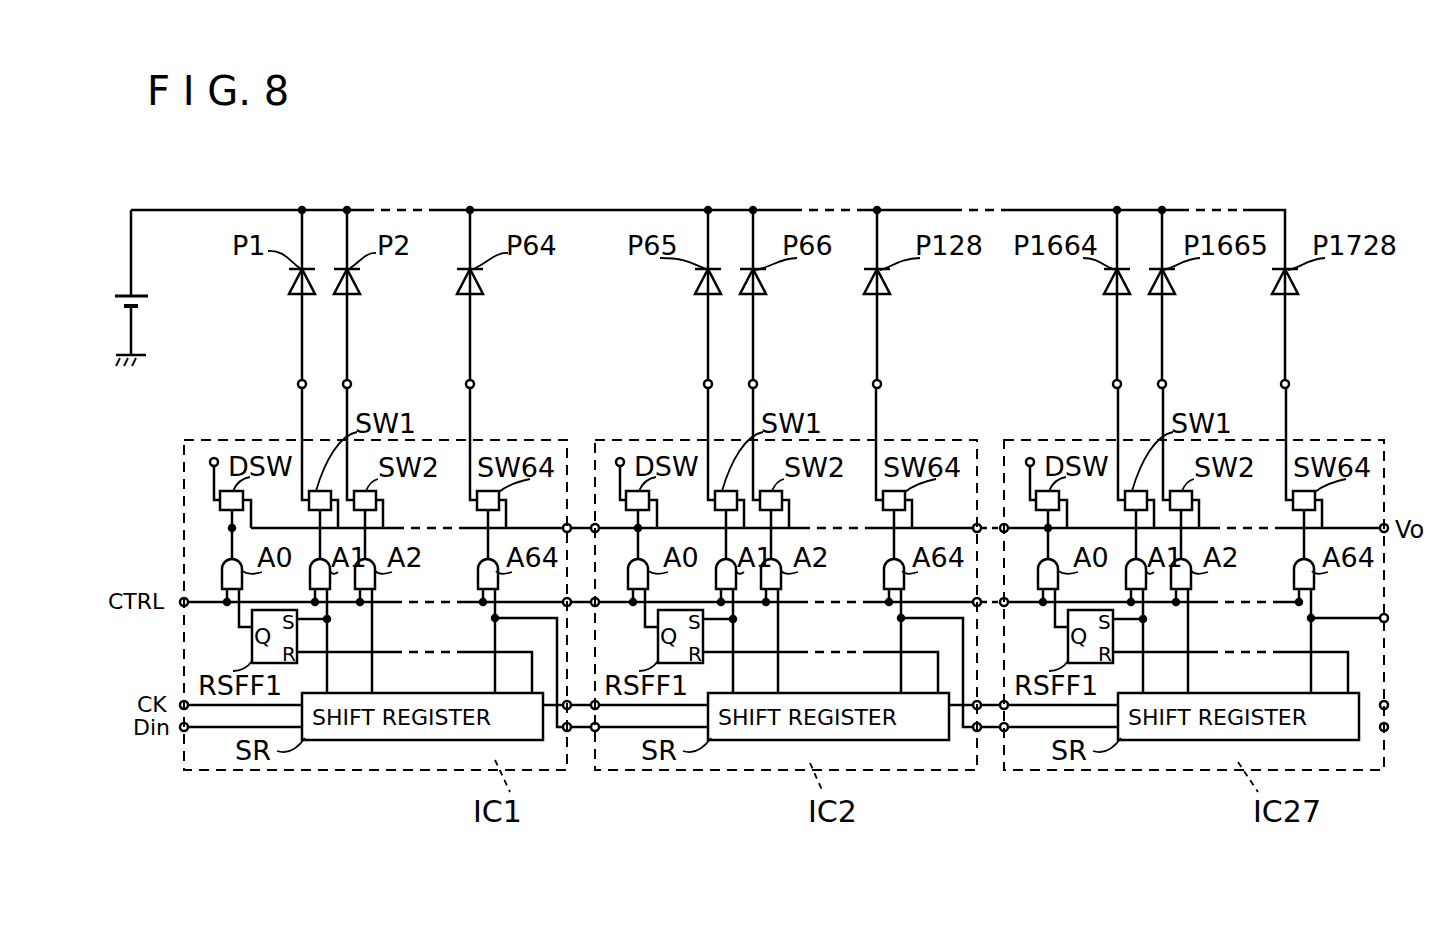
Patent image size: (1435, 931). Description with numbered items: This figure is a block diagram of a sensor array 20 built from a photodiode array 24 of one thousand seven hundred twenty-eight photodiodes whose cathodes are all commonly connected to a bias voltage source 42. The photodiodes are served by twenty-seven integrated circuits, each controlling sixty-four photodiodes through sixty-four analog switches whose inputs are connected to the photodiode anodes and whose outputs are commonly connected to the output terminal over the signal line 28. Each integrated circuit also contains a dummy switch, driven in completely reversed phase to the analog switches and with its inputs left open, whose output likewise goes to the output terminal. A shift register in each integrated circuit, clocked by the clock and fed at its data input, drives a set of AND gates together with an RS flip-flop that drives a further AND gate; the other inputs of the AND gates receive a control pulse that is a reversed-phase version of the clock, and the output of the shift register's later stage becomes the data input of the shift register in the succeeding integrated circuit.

The sensor array 20 is at (732, 167).
The photodiode array 24 is at (274, 288).
The signal line 28 is at (581, 528).
The bias voltage source 42 is at (134, 297).